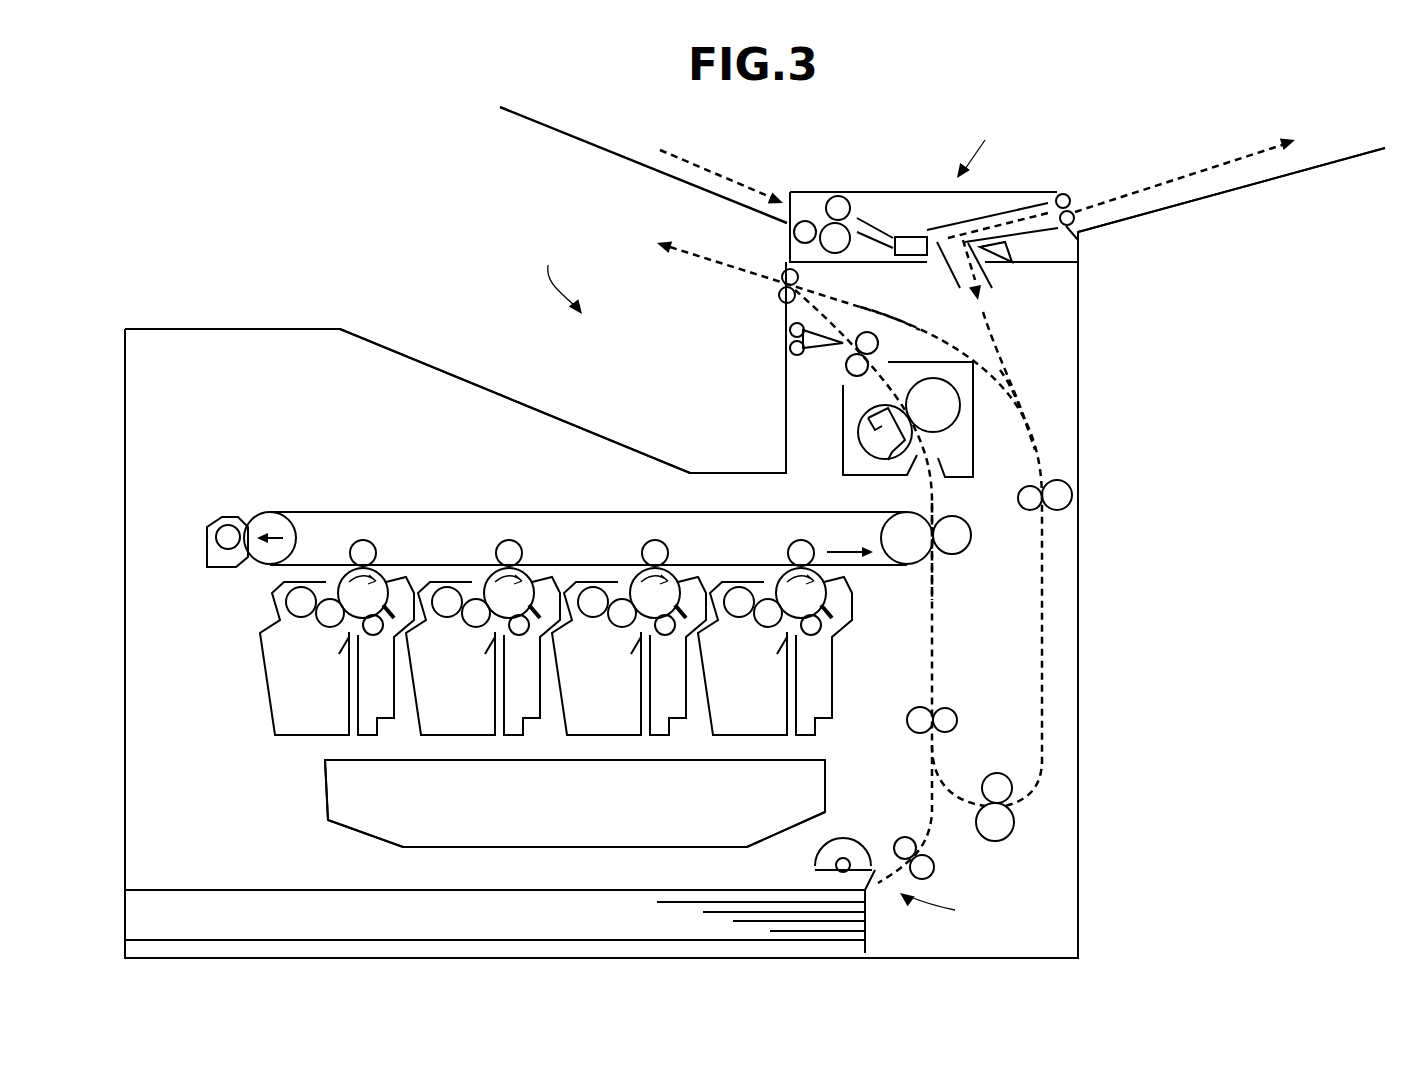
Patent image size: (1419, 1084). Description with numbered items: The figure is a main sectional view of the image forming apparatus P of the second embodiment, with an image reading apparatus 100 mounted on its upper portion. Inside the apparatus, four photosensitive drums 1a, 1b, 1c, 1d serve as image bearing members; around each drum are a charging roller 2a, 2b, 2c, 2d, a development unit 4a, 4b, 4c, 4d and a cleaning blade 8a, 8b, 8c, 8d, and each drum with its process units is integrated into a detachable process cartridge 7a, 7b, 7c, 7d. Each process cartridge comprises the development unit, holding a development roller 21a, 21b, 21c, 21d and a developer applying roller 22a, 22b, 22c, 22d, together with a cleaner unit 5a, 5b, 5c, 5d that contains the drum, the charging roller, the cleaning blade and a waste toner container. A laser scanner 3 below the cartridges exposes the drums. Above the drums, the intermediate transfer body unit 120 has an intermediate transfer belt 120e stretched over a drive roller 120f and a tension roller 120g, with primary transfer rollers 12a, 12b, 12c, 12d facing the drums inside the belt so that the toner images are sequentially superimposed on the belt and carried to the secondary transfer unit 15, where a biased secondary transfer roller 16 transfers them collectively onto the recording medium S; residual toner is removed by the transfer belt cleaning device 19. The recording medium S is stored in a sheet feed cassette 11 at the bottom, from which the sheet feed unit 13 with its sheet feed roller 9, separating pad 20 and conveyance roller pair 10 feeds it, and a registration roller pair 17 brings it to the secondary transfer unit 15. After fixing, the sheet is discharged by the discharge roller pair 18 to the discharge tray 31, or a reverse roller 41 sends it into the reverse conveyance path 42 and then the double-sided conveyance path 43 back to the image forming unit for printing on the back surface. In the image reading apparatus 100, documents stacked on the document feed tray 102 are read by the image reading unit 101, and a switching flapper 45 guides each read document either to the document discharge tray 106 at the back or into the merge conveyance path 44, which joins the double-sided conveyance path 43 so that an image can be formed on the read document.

The image reading apparatus 100 is at (987, 141).
The image reading unit 101 is at (915, 235).
The document feed tray 102 is at (600, 148).
The document discharge tray 106 is at (1243, 190).
The switching flapper 45 is at (1012, 250).
The merge conveyance path 44 is at (1005, 337).
The double-sided conveyance path 43 is at (1028, 412).
The reverse conveyance path 42 is at (885, 312).
The reverse roller 41 is at (783, 276).
The discharge roller pair 18 is at (790, 331).
The discharge tray 31 is at (505, 397).
The image forming apparatus P is at (561, 274).
The transfer belt cleaning device 19 is at (208, 553).
The tension roller 120g is at (262, 517).
The intermediate transfer belt 120e is at (287, 513).
The intermediate transfer body unit 120 is at (413, 510).
The drive roller 120f is at (912, 518).
The secondary transfer roller 16 is at (962, 535).
The secondary transfer unit 15 is at (940, 547).
The registration roller pair 17 is at (953, 720).
The separating pad 20 is at (877, 873).
The conveyance roller pair 10 is at (935, 867).
The sheet feed roller 9 is at (828, 857).
The sheet feed unit 13 is at (945, 909).
The laser scanner 3 is at (335, 790).
The sheet feed cassette 11 is at (512, 912).
The recording medium S is at (198, 912).
The photosensitive drum 1a is at (363, 593).
The photosensitive drum 1b is at (509, 593).
The photosensitive drum 1c is at (655, 593).
The photosensitive drum 1d is at (801, 593).
The primary transfer roller 12a is at (363, 540).
The primary transfer roller 12b is at (509, 540).
The primary transfer roller 12c is at (655, 540).
The primary transfer roller 12d is at (801, 540).
The developer applying roller 22a is at (301, 606).
The developer applying roller 22b is at (447, 606).
The developer applying roller 22c is at (593, 606).
The developer applying roller 22d is at (739, 606).
The development roller 21a is at (330, 617).
The development roller 21b is at (476, 617).
The development roller 21c is at (622, 617).
The development roller 21d is at (768, 617).
The charging roller 2a is at (373, 630).
The charging roller 2b is at (519, 630).
The charging roller 2c is at (665, 630).
The charging roller 2d is at (811, 630).
The cleaning blade 8a is at (395, 600).
The cleaning blade 8b is at (540, 600).
The cleaning blade 8c is at (686, 600).
The cleaning blade 8d is at (838, 614).
The process cartridge 7a is at (334, 583).
The process cartridge 7b is at (480, 583).
The process cartridge 7c is at (626, 583).
The process cartridge 7d is at (772, 583).
The development unit 4a is at (322, 577).
The development unit 4b is at (468, 578).
The development unit 4c is at (614, 578).
The development unit 4d is at (760, 578).
The cleaner unit 5a is at (385, 577).
The cleaner unit 5b is at (531, 577).
The cleaner unit 5c is at (677, 577).
The cleaner unit 5d is at (840, 585).